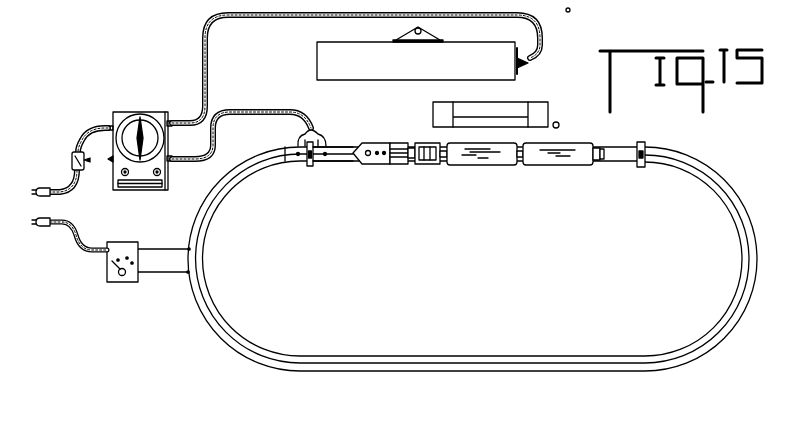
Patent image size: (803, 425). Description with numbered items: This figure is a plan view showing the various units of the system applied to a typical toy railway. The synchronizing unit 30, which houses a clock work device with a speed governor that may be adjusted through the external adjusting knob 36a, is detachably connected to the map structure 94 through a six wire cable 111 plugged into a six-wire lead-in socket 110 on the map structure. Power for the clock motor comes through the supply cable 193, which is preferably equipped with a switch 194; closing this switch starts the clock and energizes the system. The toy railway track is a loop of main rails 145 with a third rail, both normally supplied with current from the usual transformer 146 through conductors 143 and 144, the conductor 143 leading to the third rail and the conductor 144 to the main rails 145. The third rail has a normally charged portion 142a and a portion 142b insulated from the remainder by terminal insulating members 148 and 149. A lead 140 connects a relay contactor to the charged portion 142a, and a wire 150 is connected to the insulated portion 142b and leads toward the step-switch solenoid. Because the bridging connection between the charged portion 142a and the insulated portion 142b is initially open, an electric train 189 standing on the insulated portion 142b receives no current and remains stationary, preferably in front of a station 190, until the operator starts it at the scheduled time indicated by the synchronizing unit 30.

The synchronizing unit 30 is at (145, 112).
The external adjusting knob 36a is at (110, 160).
The map structure 94 is at (334, 48).
The six-wire lead-in socket 110 is at (528, 48).
The six wire cable 111 is at (545, 24).
The lead 140 is at (300, 134).
The normally charged portion of the third rail 142a is at (296, 163).
The insulated portion of the third rail 142b is at (340, 162).
The conductor 143 is at (175, 226).
The conductor 144 is at (176, 273).
The main rails 145 is at (224, 343).
The transformer 146 is at (128, 278).
The terminal insulating member 148 is at (310, 167).
The terminal insulating member 149 is at (643, 167).
The wire 150 is at (318, 140).
The electric train 189 is at (480, 166).
The station 190 is at (517, 108).
The supply cable 193 is at (100, 128).
The switch 194 is at (74, 152).